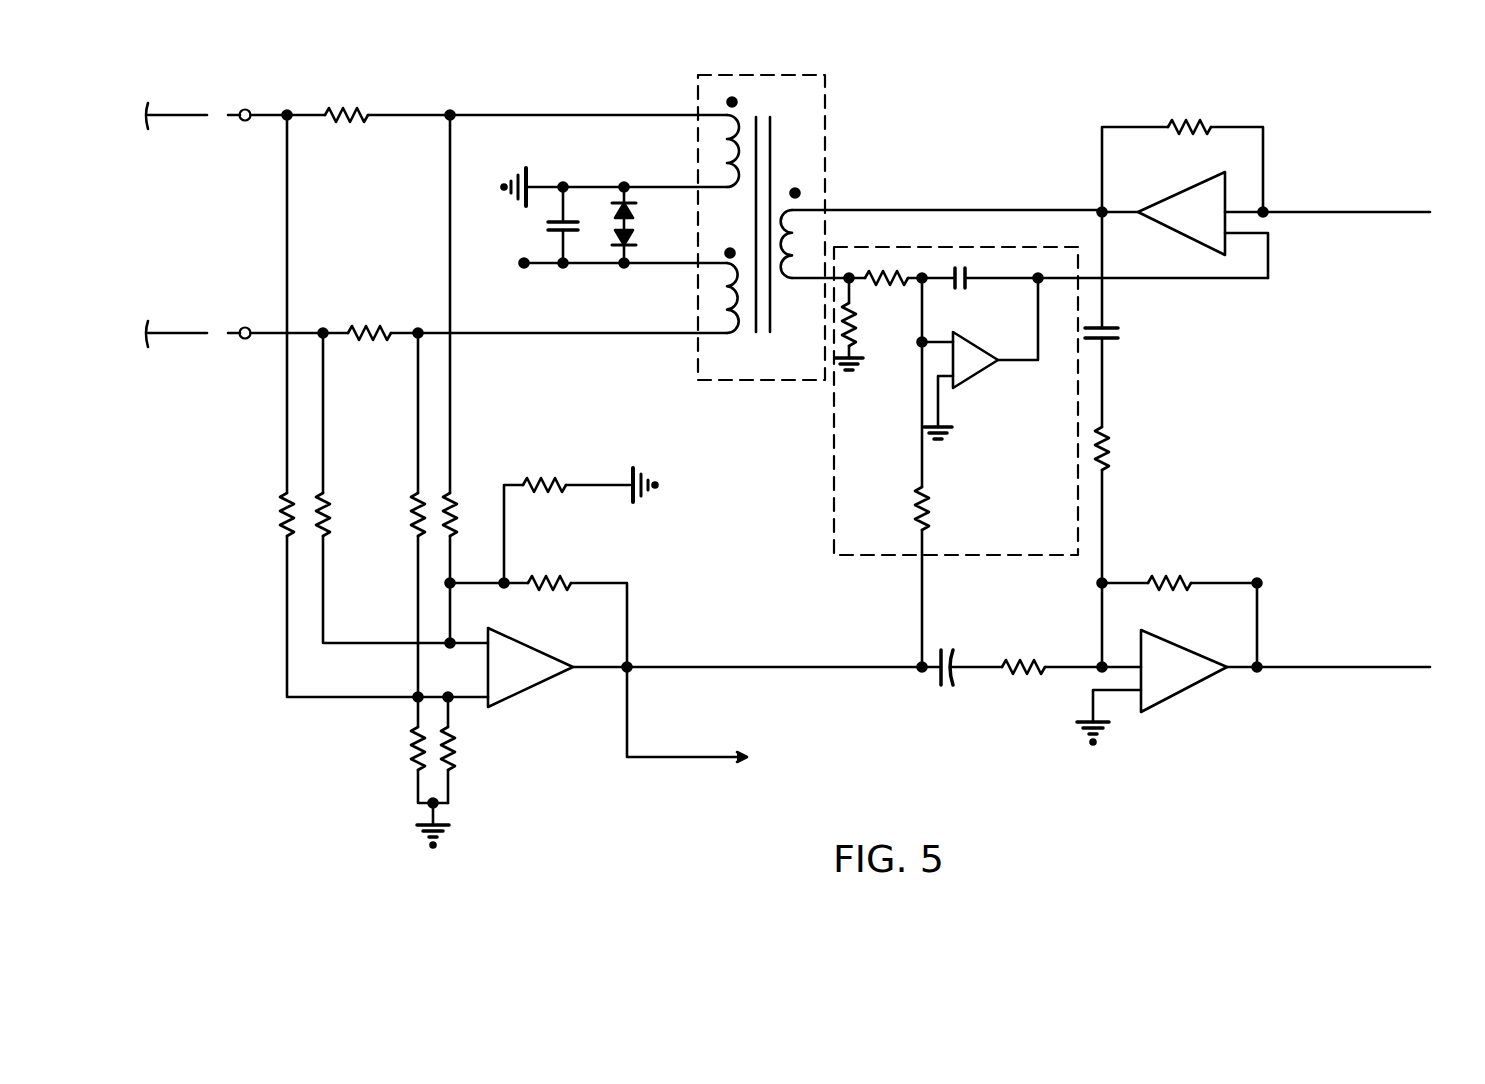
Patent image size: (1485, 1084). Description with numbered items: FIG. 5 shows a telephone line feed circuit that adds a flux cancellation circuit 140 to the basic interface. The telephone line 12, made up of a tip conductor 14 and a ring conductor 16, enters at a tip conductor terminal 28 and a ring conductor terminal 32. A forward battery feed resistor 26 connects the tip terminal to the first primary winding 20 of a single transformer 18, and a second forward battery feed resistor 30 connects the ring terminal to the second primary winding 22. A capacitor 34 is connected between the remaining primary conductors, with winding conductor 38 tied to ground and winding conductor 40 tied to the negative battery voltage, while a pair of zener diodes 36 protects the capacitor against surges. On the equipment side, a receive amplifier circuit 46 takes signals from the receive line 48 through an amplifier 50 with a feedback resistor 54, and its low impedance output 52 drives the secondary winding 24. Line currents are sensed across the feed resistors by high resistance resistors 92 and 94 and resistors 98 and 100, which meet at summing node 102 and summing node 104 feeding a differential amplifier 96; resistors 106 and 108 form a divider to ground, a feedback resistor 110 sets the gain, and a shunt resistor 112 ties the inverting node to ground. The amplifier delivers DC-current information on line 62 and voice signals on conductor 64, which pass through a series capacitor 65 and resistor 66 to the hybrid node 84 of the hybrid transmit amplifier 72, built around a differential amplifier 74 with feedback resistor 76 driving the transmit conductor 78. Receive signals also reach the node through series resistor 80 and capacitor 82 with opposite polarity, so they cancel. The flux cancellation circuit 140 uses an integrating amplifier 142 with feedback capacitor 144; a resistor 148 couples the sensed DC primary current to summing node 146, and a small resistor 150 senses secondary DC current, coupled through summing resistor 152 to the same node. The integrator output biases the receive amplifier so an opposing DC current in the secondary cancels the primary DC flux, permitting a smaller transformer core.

The telephone line 12 is at (187, 199).
The tip conductor 14 is at (178, 117).
The ring conductor 16 is at (167, 331).
The transformer 18 is at (882, 212).
The first primary winding 20 is at (722, 116).
The second primary winding 22 is at (724, 337).
The secondary winding 24 is at (812, 210).
The forward battery feed resistor 26 is at (342, 110).
The tip conductor terminal 28 is at (250, 111).
The second forward battery feed resistor 30 is at (366, 327).
The ring conductor terminal 32 is at (250, 329).
The capacitor 34 is at (549, 222).
The zener diodes 36 is at (643, 229).
The transformer winding conductor 38 is at (538, 186).
The transformer winding conductor 40 is at (550, 265).
The receive amplifier circuit 46 is at (1284, 189).
The receive line 48 is at (1404, 214).
The amplifier 50 is at (1184, 234).
The low impedance output 52 is at (1120, 210).
The feedback resistor 54 is at (1178, 124).
The line 62 is at (716, 760).
The conductor 64 is at (647, 666).
The series capacitor 65 is at (956, 656).
The resistor 66 is at (1029, 662).
The hybrid transmit amplifier 72 is at (1272, 626).
The differential amplifier 74 is at (1172, 650).
The feedback resistor 76 is at (1166, 584).
The transmit conductor 78 is at (1388, 667).
The series resistor 80 is at (1110, 446).
The capacitor 82 is at (1122, 336).
The hybrid node 84 is at (1104, 582).
The resistor 92 is at (282, 538).
The resistor 94 is at (458, 520).
The differential amplifier 96 is at (519, 709).
The resistor 98 is at (333, 519).
The resistor 100 is at (416, 531).
The summing node 102 is at (411, 698).
The summing node 104 is at (458, 641).
The resistor 106 is at (408, 766).
The resistor 108 is at (454, 752).
The feedback resistor 110 is at (574, 578).
The shunt resistor 112 is at (554, 482).
The flux cancellation circuit 140 is at (956, 437).
The integrating amplifier 142 is at (968, 344).
The feedback capacitor 144 is at (967, 280).
The summing node 146 is at (922, 342).
The resistor 148 is at (932, 518).
The small resistor 150 is at (850, 342).
The summing resistor 152 is at (885, 278).